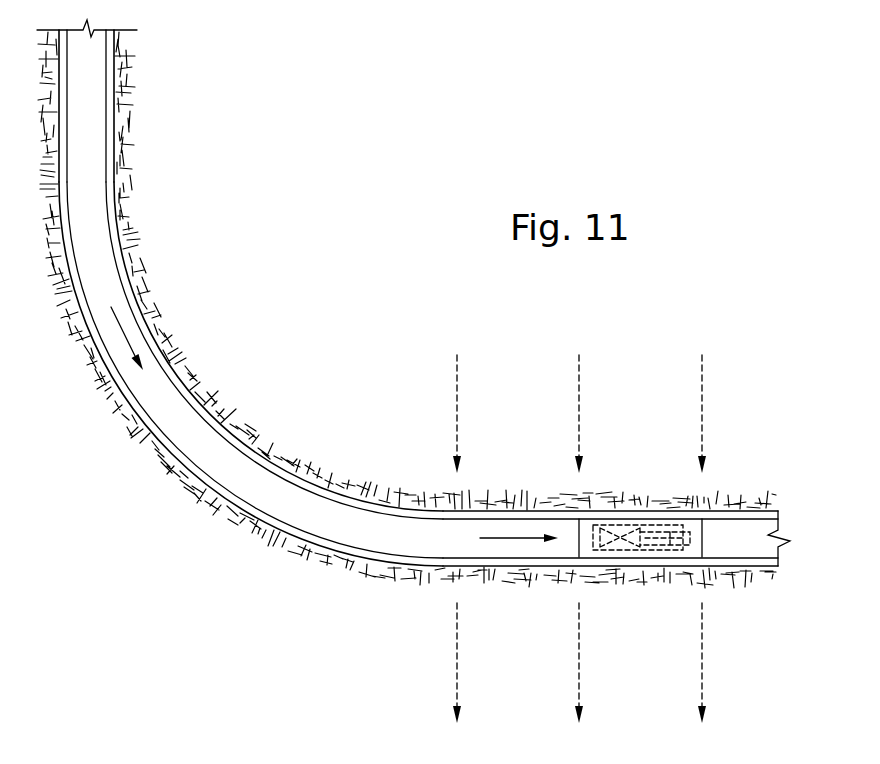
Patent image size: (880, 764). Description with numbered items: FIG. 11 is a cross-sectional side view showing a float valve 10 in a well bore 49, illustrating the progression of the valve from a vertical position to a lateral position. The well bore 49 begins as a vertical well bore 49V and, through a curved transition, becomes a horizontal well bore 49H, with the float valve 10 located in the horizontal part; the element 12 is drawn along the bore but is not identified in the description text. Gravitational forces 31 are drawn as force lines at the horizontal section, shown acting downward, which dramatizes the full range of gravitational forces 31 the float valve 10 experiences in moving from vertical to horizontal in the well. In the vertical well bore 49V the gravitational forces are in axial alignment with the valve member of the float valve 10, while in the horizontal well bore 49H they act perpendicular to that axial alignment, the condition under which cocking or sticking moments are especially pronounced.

The float valve 10 is at (653, 526).
The casing 12 is at (310, 536).
The gravitational forces 31 is at (457, 392).
The well bore 49 is at (170, 468).
The vertical well bore 49V is at (118, 96).
The horizontal well bore 49H is at (738, 565).